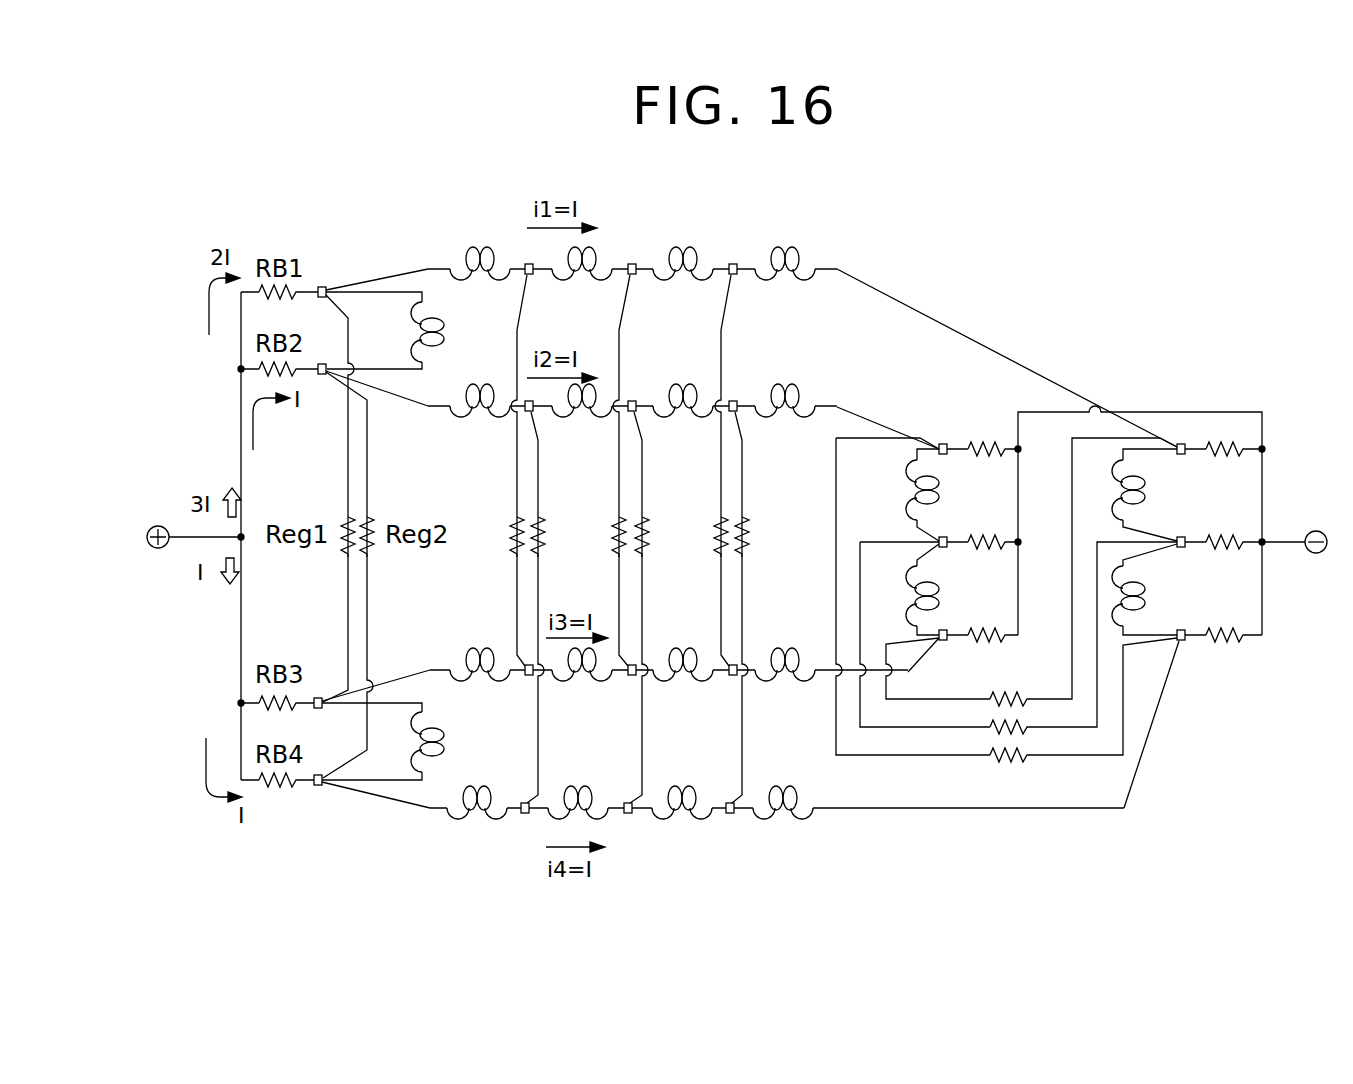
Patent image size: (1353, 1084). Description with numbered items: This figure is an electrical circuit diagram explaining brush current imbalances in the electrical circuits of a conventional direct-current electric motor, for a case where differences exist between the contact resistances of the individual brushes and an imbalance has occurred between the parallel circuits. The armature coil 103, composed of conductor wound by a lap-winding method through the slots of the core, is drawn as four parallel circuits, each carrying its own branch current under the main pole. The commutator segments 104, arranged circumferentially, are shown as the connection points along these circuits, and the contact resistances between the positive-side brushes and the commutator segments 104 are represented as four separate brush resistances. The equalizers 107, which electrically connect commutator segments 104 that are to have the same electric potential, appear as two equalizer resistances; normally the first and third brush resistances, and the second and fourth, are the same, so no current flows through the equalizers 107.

The armature coil 103 is at (716, 840).
The commutator segments 104 is at (320, 787).
The equalizers 107 is at (369, 458).